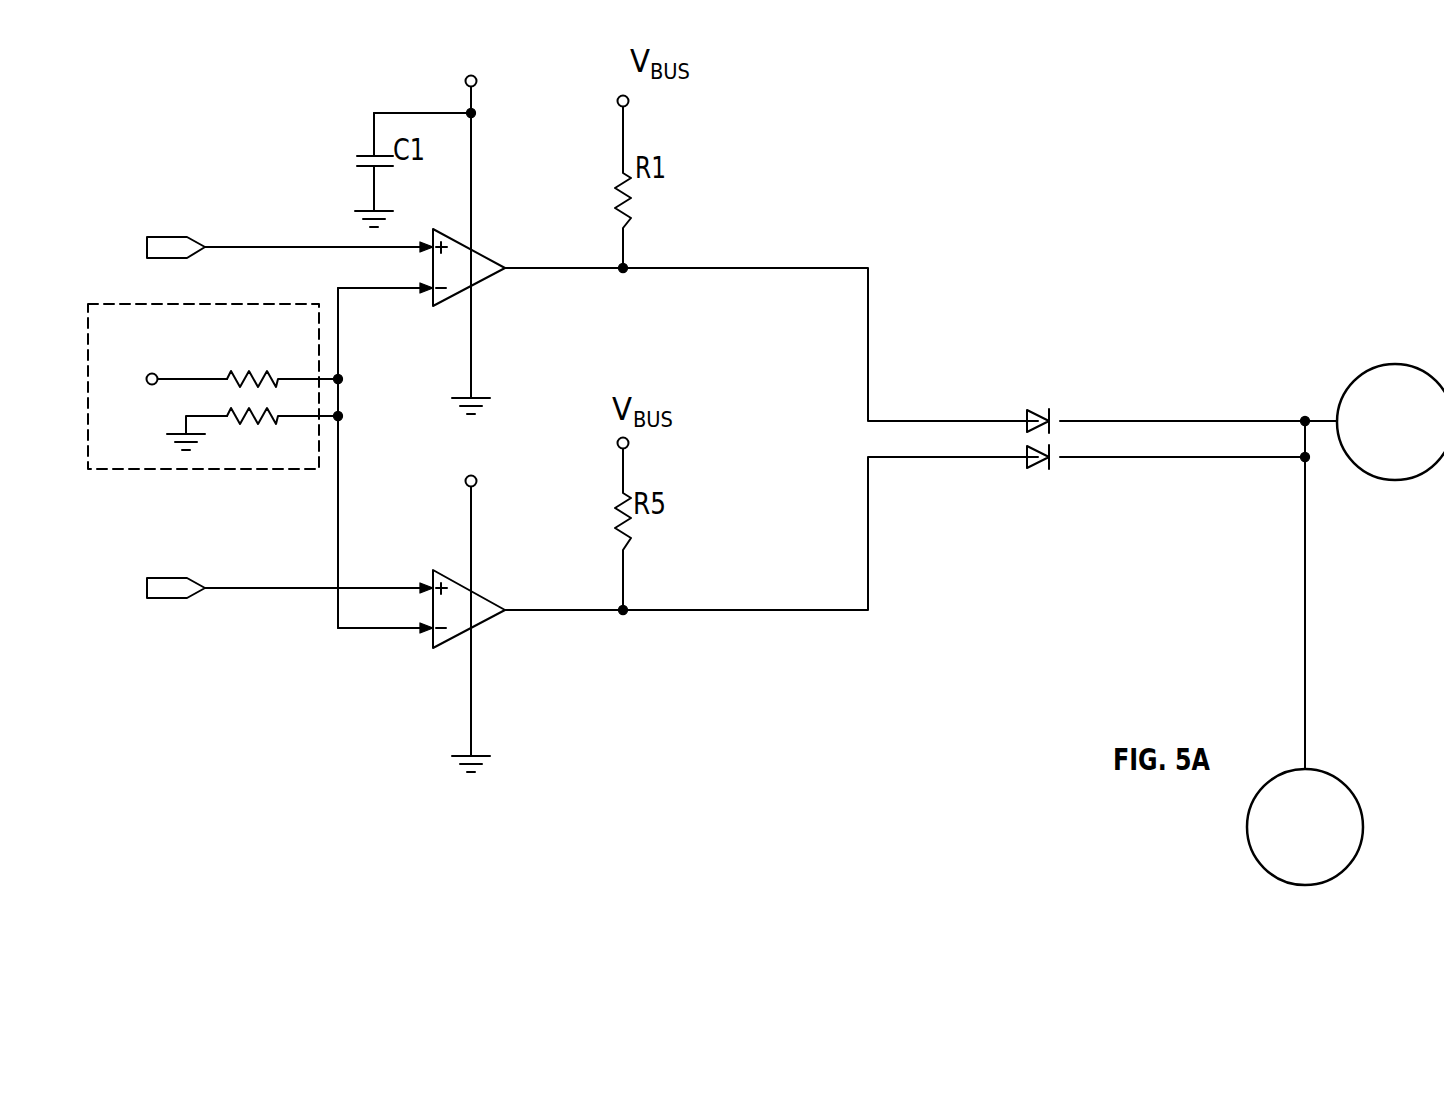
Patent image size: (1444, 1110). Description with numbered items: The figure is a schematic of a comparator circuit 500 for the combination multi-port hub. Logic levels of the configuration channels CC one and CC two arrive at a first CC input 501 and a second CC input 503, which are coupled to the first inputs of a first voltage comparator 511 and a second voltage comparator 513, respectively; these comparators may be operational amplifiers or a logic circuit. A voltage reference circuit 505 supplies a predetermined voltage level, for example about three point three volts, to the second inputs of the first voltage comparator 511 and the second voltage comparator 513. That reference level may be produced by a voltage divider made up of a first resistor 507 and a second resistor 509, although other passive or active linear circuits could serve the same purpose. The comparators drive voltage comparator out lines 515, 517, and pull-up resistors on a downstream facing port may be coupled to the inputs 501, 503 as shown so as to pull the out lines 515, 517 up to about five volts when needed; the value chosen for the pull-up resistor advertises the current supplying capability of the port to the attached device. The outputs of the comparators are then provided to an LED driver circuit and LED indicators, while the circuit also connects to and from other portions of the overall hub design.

The comparator circuit 500 is at (158, 98).
The first CC input 501 is at (168, 237).
The second CC input 503 is at (168, 578).
The voltage reference circuit 505 is at (155, 303).
The first resistor 507 is at (228, 376).
The second resistor 509 is at (242, 420).
The first voltage comparator 511 is at (490, 252).
The second voltage comparator 513 is at (478, 592).
The voltage comparator out line 515 is at (752, 270).
The voltage comparator out line 517 is at (733, 612).